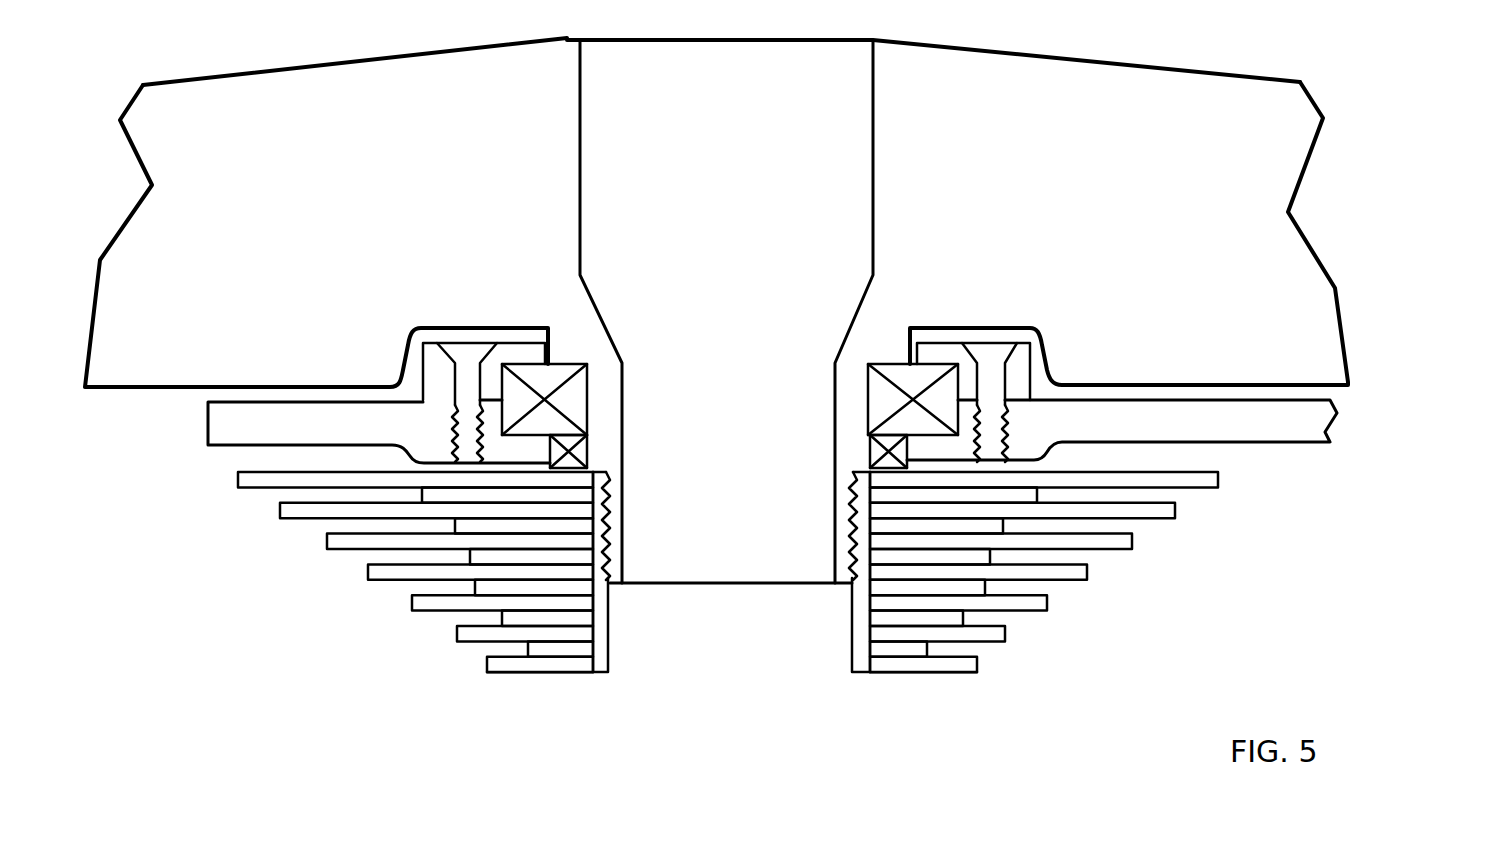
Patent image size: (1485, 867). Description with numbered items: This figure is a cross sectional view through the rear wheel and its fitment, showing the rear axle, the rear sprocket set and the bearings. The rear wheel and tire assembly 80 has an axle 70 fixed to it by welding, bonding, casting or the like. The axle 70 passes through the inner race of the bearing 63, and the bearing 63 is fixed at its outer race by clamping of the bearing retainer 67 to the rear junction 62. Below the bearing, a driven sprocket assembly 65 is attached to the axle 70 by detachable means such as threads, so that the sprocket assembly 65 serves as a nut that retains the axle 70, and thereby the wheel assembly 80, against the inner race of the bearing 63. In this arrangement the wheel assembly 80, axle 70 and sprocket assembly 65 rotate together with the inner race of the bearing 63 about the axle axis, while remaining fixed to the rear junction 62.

The rear wheel and tire assembly 80 is at (1313, 98).
The axle 70 is at (763, 583).
The bearing retainer 67 is at (1018, 382).
The bearing 63 is at (913, 383).
The rear junction 62 is at (1262, 427).
The driven sprocket assembly 65 is at (1132, 542).